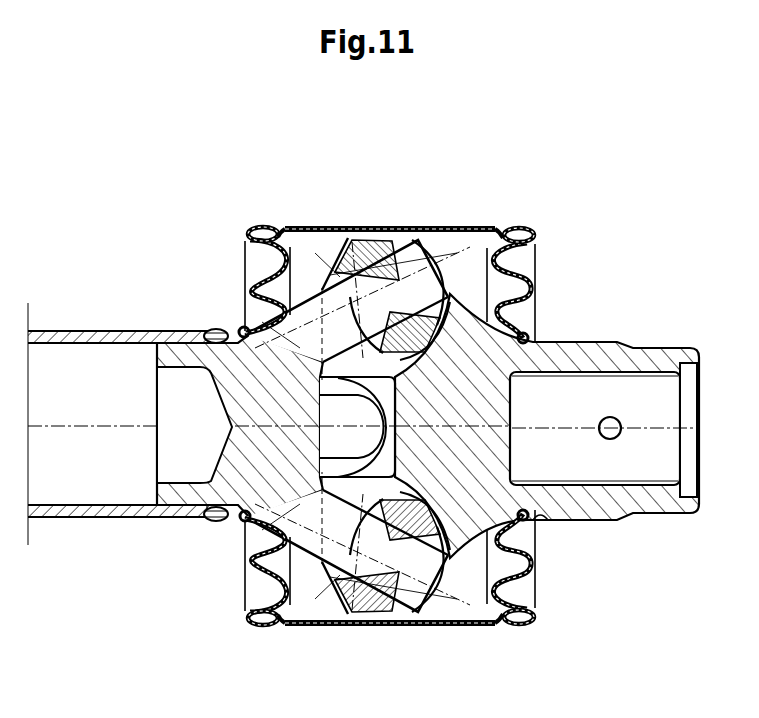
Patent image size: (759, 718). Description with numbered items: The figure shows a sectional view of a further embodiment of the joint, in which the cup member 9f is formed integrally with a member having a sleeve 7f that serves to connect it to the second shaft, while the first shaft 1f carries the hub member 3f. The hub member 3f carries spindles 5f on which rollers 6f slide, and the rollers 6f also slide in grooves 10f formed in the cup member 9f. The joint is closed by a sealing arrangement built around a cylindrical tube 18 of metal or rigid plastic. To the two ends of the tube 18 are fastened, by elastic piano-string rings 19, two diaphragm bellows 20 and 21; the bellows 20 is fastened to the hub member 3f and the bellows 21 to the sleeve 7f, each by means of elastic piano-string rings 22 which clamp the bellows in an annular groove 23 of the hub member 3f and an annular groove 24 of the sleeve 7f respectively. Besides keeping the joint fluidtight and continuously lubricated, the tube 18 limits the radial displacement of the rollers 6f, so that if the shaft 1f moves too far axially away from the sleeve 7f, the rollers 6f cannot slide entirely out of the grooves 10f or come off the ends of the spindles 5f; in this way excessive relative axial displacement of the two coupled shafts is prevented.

The shaft 1f is at (66, 518).
The hub member 3f is at (195, 516).
The spindles 5f is at (425, 284).
The rollers 6f is at (362, 245).
The sleeve 7f is at (612, 518).
The cup member 9f is at (548, 345).
The grooves 10f is at (460, 548).
The cylindrical tube 18 is at (402, 228).
The elastic rings 19 is at (279, 228).
The diaphragm bellows 20 is at (245, 280).
The diaphragm bellows 21 is at (533, 283).
The elastic rings 22 is at (243, 522).
The annular groove 23 is at (219, 522).
The annular groove 24 is at (548, 523).